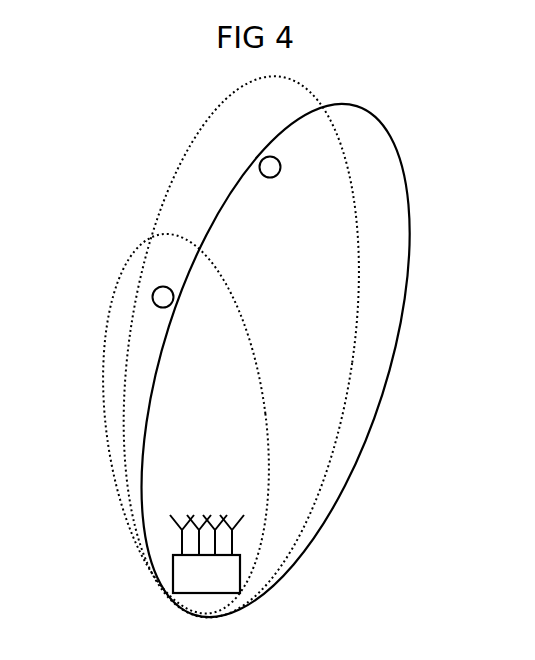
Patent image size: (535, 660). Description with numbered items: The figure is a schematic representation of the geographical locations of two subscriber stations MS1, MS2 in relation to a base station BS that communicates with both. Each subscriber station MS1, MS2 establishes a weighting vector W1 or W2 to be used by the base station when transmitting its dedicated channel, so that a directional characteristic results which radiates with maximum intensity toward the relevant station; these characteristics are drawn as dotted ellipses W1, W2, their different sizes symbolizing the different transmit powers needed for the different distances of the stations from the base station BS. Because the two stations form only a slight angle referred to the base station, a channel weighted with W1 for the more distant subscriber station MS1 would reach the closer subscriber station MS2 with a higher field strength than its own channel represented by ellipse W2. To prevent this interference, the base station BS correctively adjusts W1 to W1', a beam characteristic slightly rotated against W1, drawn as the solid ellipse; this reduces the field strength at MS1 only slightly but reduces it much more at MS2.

The weighting vector W1 is at (241, 347).
The corrected weighting vector W1' is at (279, 360).
The weighting vector W2 is at (100, 371).
The subscriber station MS1 is at (270, 178).
The subscriber station MS2 is at (163, 308).
The base station BS is at (207, 554).